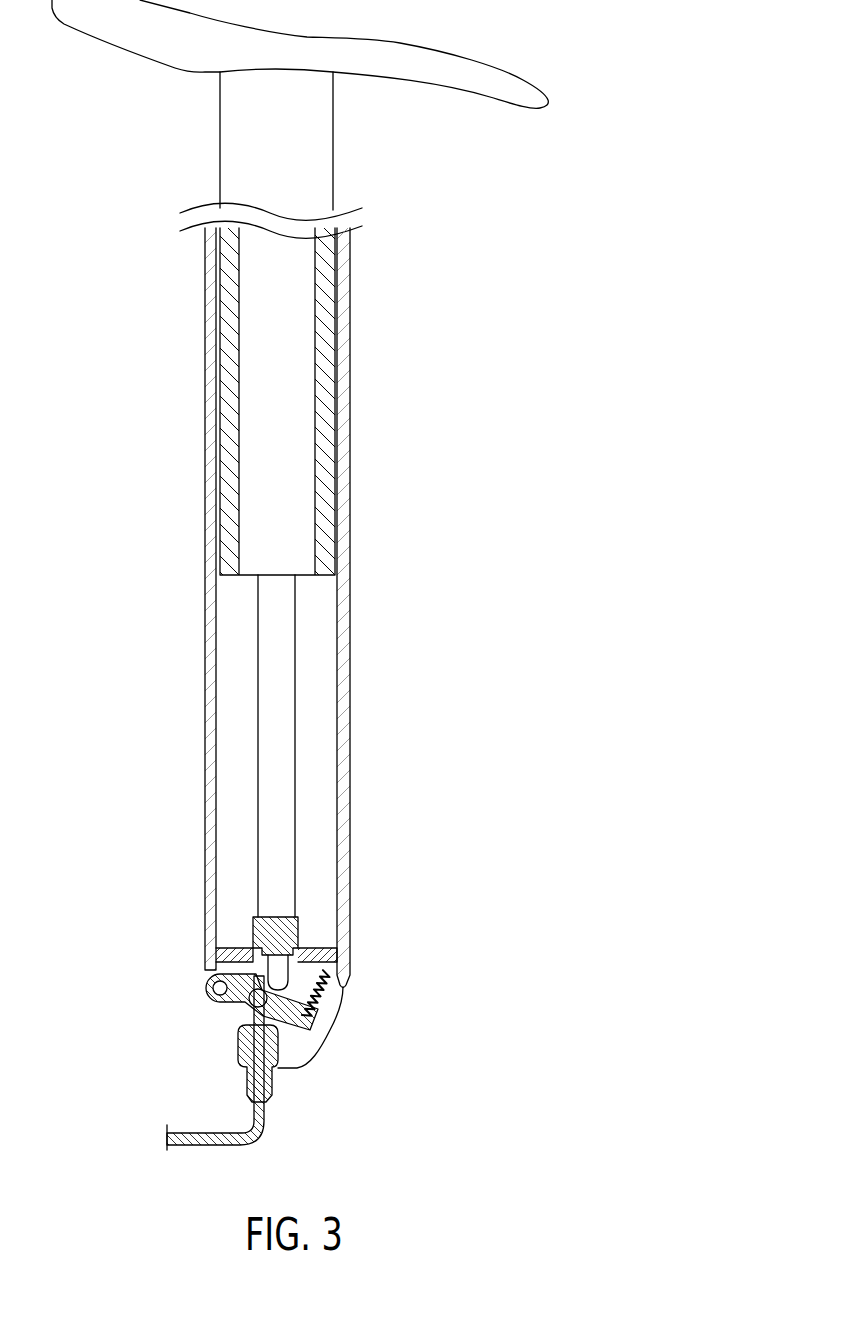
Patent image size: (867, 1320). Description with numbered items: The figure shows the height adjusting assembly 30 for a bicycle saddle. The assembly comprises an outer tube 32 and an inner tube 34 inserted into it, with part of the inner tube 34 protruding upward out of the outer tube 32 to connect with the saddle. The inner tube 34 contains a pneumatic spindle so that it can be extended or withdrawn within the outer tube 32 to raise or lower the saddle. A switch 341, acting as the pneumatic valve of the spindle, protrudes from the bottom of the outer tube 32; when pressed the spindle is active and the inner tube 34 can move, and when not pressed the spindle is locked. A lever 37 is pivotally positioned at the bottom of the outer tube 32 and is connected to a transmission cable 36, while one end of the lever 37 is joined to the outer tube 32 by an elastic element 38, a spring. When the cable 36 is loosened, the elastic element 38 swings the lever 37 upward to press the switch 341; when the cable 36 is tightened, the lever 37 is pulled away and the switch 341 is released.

The height adjusting assembly 30 is at (122, 262).
The outer tube 32 is at (350, 470).
The inner tube 34 is at (295, 427).
The switch 341 is at (278, 975).
The transmission cable 36 is at (257, 1081).
The lever 37 is at (207, 988).
The elastic element 38 is at (338, 988).